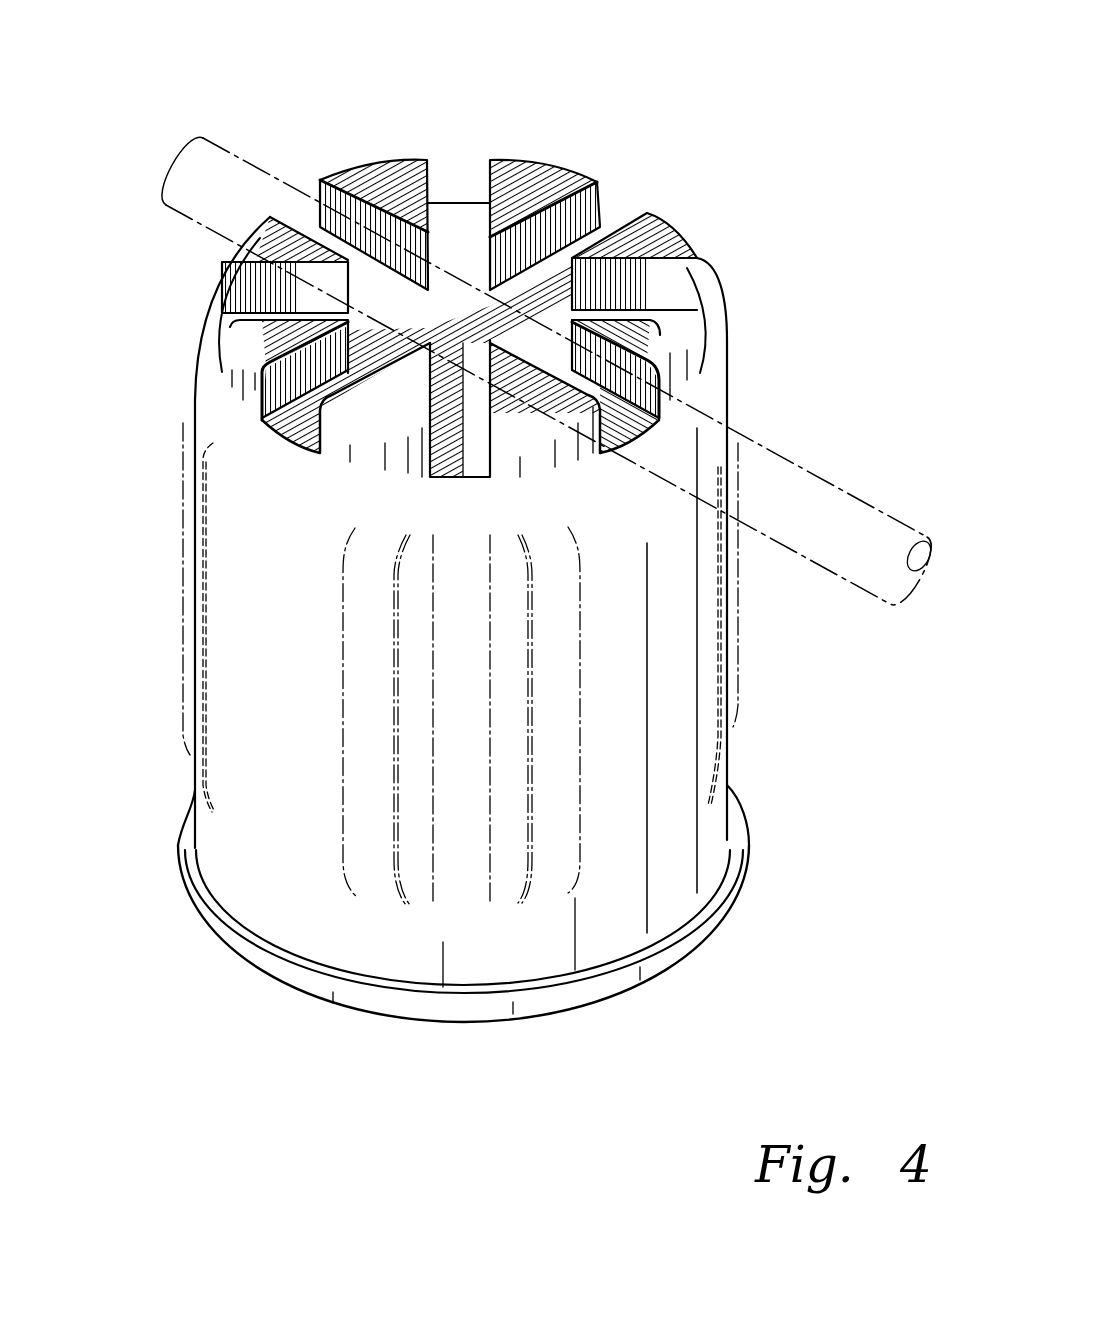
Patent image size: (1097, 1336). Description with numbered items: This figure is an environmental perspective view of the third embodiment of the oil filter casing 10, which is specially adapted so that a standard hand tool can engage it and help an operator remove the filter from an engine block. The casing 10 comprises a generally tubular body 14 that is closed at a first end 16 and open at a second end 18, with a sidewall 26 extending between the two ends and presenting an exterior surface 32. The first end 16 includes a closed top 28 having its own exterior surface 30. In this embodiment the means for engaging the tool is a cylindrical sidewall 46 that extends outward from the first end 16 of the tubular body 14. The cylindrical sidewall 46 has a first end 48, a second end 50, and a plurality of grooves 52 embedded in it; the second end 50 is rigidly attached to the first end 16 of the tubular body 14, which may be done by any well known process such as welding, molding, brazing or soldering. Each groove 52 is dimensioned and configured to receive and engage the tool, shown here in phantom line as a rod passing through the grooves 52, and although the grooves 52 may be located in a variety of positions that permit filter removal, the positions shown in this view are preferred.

The oil filter casing 10 is at (624, 120).
The tubular body 14 is at (755, 680).
The first end 16 is at (716, 306).
The second end 18 is at (765, 815).
The sidewall 26 is at (284, 636).
The closed top 28 is at (474, 258).
The exterior surface 30 is at (467, 205).
The exterior surface 32 is at (668, 612).
The cylindrical sidewall 46 is at (233, 353).
The first end 48 is at (600, 163).
The second end 50 is at (603, 207).
The grooves 52 is at (306, 421).